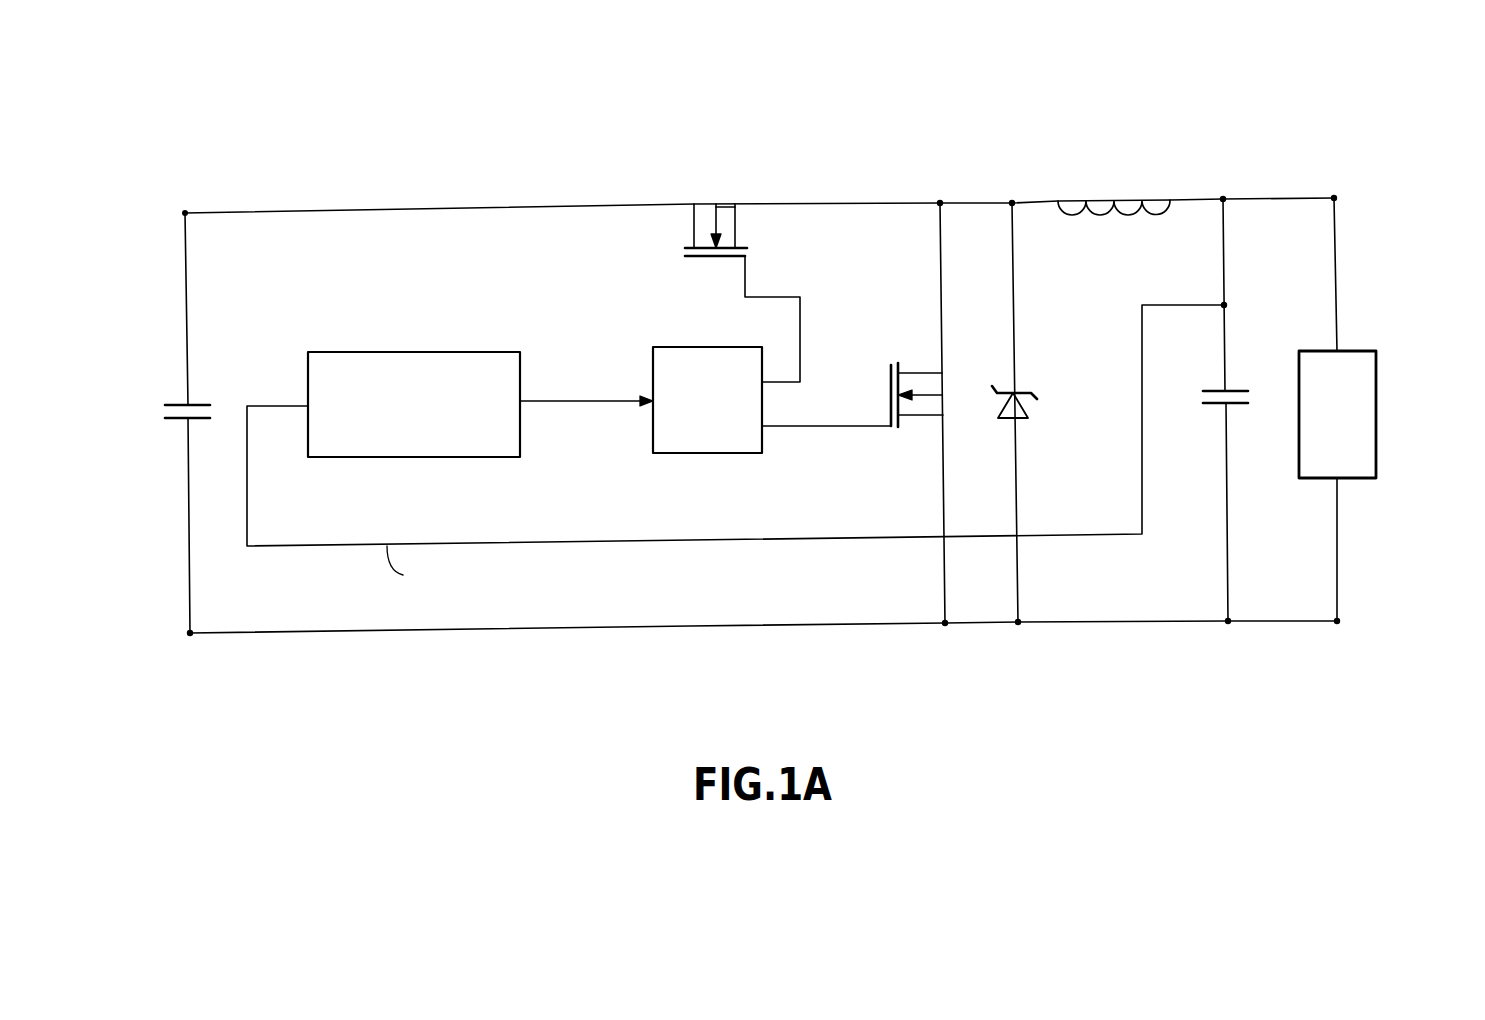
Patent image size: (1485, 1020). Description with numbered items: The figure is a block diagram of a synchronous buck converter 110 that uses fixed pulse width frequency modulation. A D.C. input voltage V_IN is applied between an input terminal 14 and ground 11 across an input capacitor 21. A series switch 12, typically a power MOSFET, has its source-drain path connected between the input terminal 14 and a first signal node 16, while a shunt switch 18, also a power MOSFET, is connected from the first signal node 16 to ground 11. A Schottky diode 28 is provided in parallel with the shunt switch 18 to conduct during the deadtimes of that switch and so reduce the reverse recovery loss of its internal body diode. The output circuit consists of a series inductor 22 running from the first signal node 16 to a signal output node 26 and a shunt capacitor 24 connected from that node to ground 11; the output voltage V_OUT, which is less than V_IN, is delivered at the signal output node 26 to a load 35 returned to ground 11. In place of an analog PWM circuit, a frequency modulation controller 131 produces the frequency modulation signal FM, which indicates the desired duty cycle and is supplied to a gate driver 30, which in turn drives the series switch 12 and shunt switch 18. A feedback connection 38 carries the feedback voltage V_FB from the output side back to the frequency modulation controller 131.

The buck converter 110 is at (480, 128).
The input terminal 14 is at (187, 212).
The input capacitor 21 is at (178, 422).
The series switch 12 is at (715, 262).
The first signal node 16 is at (940, 203).
The shunt switch 18 is at (890, 378).
The gate driver 30 is at (690, 453).
The frequency modulation controller 131 is at (377, 457).
The feedback path (V_FB) 38 is at (728, 540).
The Schottky diode 28 is at (1020, 418).
The series inductor 22 is at (1115, 201).
The signal output node 26 is at (1223, 199).
The shunt capacitor 24 is at (1218, 408).
The load 35 is at (1376, 412).
The ground 11 is at (690, 626).